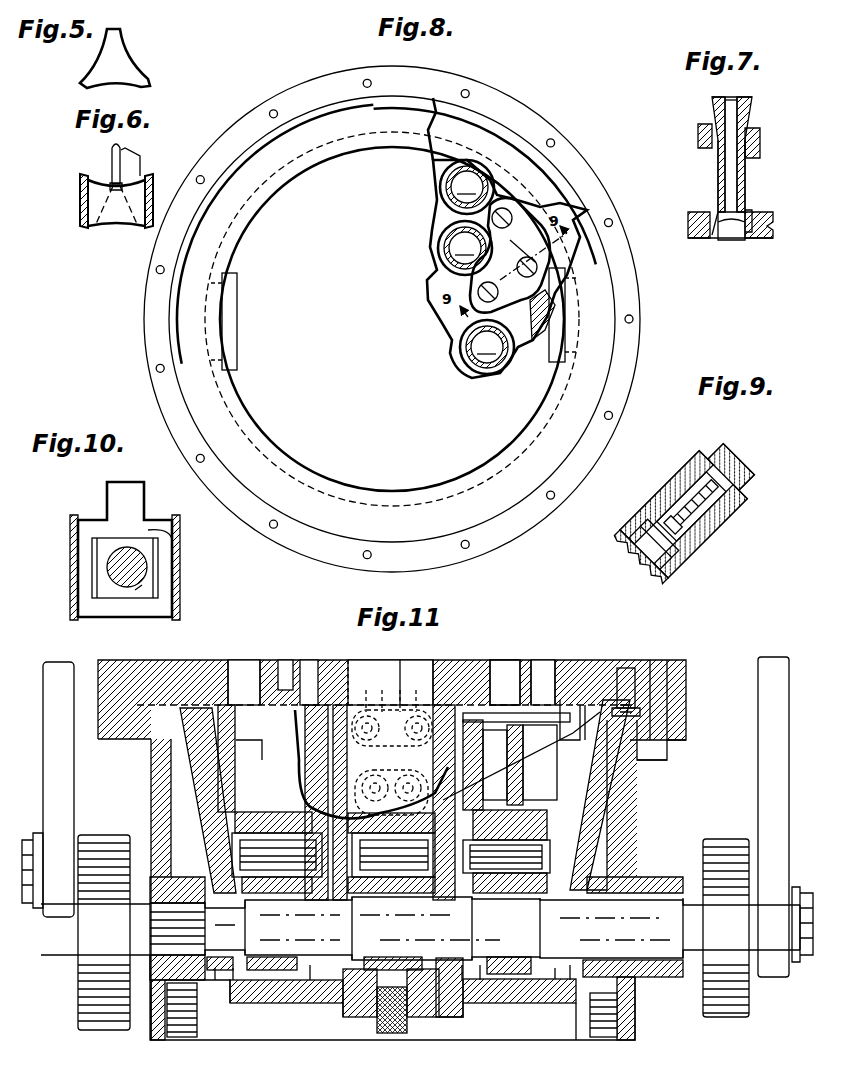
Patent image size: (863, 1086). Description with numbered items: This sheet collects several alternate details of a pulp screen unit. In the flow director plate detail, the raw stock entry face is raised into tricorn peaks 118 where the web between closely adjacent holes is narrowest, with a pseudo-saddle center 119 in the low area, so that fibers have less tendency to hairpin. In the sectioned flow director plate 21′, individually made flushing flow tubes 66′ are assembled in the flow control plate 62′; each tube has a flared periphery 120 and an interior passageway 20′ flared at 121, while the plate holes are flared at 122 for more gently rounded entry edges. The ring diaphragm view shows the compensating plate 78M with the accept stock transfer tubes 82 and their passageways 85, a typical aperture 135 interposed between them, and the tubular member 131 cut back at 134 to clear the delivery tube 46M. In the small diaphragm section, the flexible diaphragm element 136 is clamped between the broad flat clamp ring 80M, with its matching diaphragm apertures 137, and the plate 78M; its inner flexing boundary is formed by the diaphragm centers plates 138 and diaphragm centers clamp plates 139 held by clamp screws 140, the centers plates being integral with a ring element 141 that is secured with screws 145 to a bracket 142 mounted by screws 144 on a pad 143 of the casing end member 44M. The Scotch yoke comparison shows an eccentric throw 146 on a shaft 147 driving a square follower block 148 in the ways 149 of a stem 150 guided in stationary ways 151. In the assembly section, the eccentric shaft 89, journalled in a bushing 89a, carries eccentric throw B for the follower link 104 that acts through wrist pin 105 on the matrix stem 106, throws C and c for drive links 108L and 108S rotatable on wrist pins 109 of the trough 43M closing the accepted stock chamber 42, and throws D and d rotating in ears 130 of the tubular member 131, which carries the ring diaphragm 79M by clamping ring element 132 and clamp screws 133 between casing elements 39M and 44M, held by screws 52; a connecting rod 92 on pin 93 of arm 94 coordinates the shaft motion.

In FIG. 6, the pseudo-saddle center 119 is at (116, 181).
In FIG. 6, the tricorn peaks 118 is at (126, 152).
In FIG. 7, the interior passageway 20′ is at (733, 103).
In FIG. 7, the flow control plate 62′ is at (760, 136).
In FIG. 7, the flushing flow tube 66′ is at (745, 168).
In FIG. 7, the internal flare 121 is at (748, 200).
In FIG. 7, the flow director plate 21′ is at (773, 218).
In FIG. 7, the flared periphery 120 is at (712, 210).
In FIG. 7, the flared holes 122 is at (706, 240).
In FIG. 8, the cut back 134 is at (386, 110).
In FIG. 11, the cut back 134 is at (278, 790).
In FIG. 8, the accept stock transfer tubes 82 is at (467, 161).
In FIG. 8, the central fluid communicating passageways 85 is at (475, 267).
In FIG. 11, the central fluid communicating passageways 85 is at (244, 672).
In FIG. 8, the clamp screws 140 is at (504, 207).
In FIG. 9, the clamp screws 140 is at (675, 487).
In FIG. 8, the apertures 135 is at (522, 218).
In FIG. 9, the apertures 135 is at (643, 523).
In FIG. 8, the diaphragm centers clamp plates 139 is at (545, 206).
In FIG. 9, the diaphragm centers clamp plates 139 is at (669, 483).
In FIG. 11, the diaphragm centers clamp plates 139 is at (500, 700).
In FIG. 8, the tubular member 131 is at (610, 190).
In FIG. 11, the tubular member 131 is at (605, 800).
In FIG. 8, the ring element 141 is at (444, 220).
In FIG. 9, the ring element 141 is at (722, 537).
In FIG. 11, the ring element 141 is at (516, 756).
In FIG. 9, the flexible diaphragm element 136 is at (685, 488).
In FIG. 11, the flexible diaphragm element 136 is at (562, 735).
In FIG. 9, the diaphragm centers plates 138 is at (714, 529).
In FIG. 9, the diaphragm apertures 137 is at (684, 559).
In FIG. 10, the stem 150 is at (125, 482).
In FIG. 10, the eccentric follower block 148 is at (105, 542).
In FIG. 10, the ways 149 is at (152, 565).
In FIG. 10, the stationary ways 151 is at (70, 580).
In FIG. 10, the shaft 147 is at (118, 580).
In FIG. 10, the eccentric throw 146 is at (134, 585).
In FIG. 11, the compensating plate 78M is at (286, 688).
In FIG. 11, the accept stock delivery tube 46M is at (346, 700).
In FIG. 11, the screening aperture matrix stem 106 is at (405, 700).
In FIG. 11, the pad 143 is at (440, 700).
In FIG. 11, the clamp screws 133 is at (627, 668).
In FIG. 11, the clamping ring element 132 is at (640, 700).
In FIG. 11, the ring diaphragm 79M is at (660, 690).
In FIG. 11, the casing element 39M is at (686, 675).
In FIG. 11, the casing end member 44M is at (686, 714).
In FIG. 11, the clamp ring 80M is at (589, 701).
In FIG. 11, the accepted stock chamber 42 is at (405, 800).
In FIG. 11, the trough 43M is at (240, 740).
In FIG. 11, the wrist pin 109 is at (285, 850).
In FIG. 11, the wrist pin 105 is at (492, 765).
In FIG. 11, the screws 144 is at (392, 705).
In FIG. 11, the screws 145 is at (393, 695).
In FIG. 11, the bracket 142 is at (396, 770).
In FIG. 11, the connecting rod 92 is at (76, 770).
In FIG. 11, the pin 93 is at (38, 838).
In FIG. 11, the arm 94 is at (84, 1000).
In FIG. 11, the eccentric shaft 89 is at (648, 935).
In FIG. 11, the bushing 89a is at (180, 965).
In FIG. 11, the ears 130 is at (234, 968).
In FIG. 11, the eccentric drive link 108S is at (227, 1010).
In FIG. 11, the eccentric follower link 104 is at (367, 1012).
In FIG. 11, the eccentric drive link 108L is at (552, 1015).
In FIG. 11, the screws 52 is at (650, 757).
In FIG. 11, the eccentric throw d is at (215, 968).
In FIG. 11, the eccentric throw c is at (310, 1003).
In FIG. 11, the eccentric throw B is at (462, 1003).
In FIG. 11, the eccentric throw C is at (482, 1003).
In FIG. 11, the eccentric throw D is at (572, 1003).